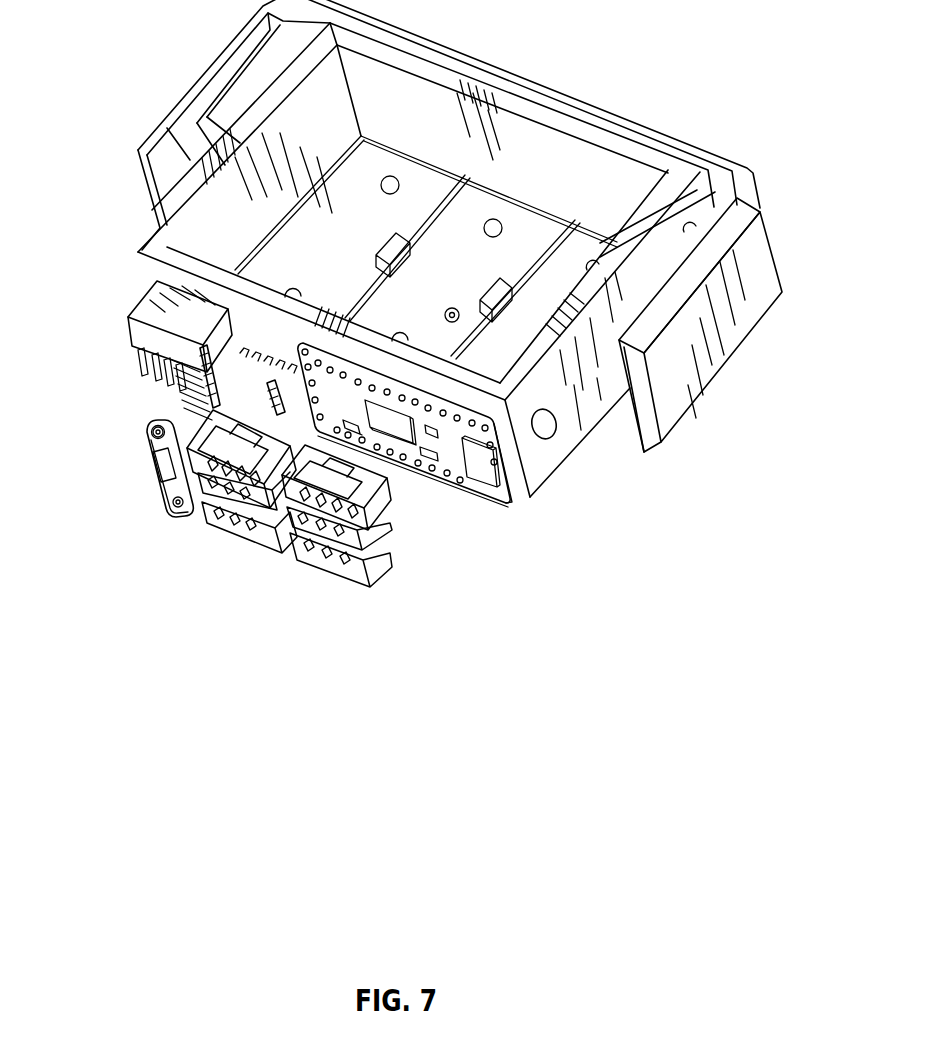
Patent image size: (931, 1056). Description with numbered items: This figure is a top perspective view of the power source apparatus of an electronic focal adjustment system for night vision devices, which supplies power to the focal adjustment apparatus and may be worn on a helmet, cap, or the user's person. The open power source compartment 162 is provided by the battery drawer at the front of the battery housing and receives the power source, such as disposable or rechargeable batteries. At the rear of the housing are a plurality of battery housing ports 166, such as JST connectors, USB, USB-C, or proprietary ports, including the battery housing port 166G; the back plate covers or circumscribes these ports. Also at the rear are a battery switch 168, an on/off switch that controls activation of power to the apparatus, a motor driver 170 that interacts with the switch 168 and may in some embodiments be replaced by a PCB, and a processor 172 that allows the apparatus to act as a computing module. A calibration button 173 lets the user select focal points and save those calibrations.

The power source compartment 162 is at (495, 172).
The battery housing ports 166 is at (242, 526).
The battery housing port 166G is at (147, 310).
The battery switch 168 is at (168, 510).
The motor driver 170 is at (152, 436).
The processor 172 is at (500, 500).
The calibration button 173 is at (548, 432).